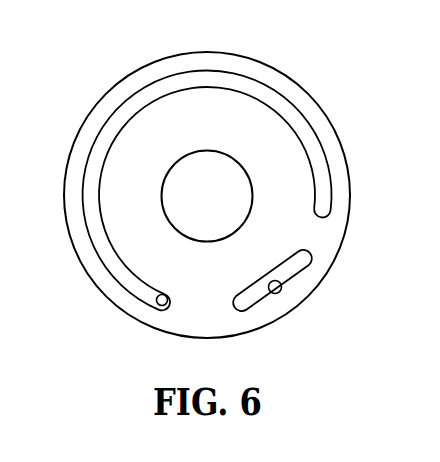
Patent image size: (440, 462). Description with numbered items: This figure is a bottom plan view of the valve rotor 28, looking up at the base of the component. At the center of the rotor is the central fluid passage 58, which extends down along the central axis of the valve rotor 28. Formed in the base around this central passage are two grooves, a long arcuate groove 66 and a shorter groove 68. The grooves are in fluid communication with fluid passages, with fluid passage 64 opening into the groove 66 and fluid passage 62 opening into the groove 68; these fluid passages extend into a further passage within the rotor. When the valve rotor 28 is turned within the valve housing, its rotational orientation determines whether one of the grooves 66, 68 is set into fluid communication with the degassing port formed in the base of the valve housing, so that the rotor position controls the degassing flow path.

The valve rotor 28 is at (296, 75).
The central fluid passage 58 is at (237, 229).
The groove 66 is at (93, 250).
The fluid passage 64 is at (156, 299).
The groove 68 is at (295, 269).
The fluid passage 62 is at (282, 286).